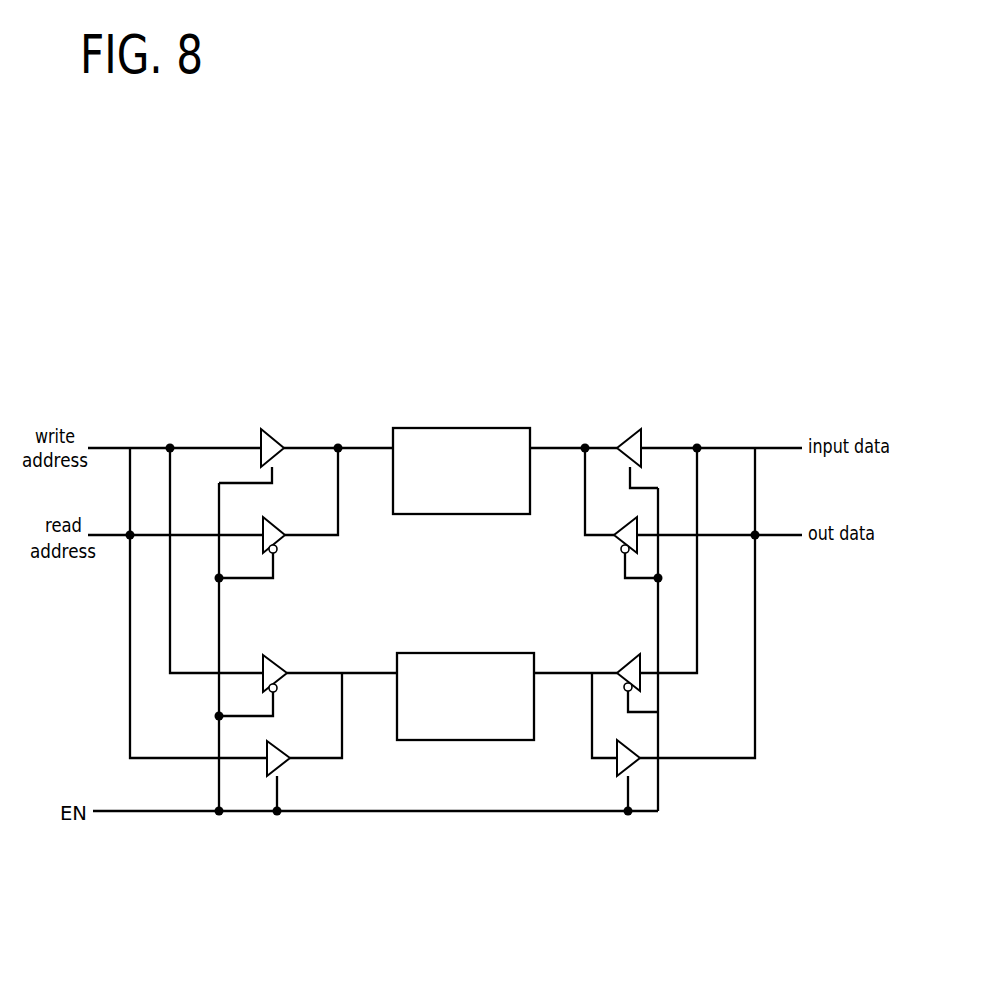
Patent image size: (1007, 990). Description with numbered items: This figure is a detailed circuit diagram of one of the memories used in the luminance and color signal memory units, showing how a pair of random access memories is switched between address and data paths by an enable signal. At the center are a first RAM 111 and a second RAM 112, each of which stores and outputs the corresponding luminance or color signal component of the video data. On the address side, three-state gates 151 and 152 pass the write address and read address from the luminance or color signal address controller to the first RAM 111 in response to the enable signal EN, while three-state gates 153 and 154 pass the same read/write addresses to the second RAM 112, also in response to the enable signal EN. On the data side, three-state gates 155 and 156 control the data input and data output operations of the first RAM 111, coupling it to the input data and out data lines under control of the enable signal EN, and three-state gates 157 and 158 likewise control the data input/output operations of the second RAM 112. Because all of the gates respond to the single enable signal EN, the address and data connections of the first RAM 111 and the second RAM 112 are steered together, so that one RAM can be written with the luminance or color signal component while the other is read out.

The first random access memory 111 is at (456, 428).
The second random access memory 112 is at (458, 653).
The 3-state gate 151 is at (276, 429).
The 3-state gate 152 is at (283, 538).
The 3-state gate 153 is at (283, 664).
The 3-state gate 154 is at (285, 762).
The 3-state gate 155 is at (641, 428).
The 3-state gate 156 is at (640, 527).
The 3-state gate 157 is at (622, 655).
The 3-state gate 158 is at (637, 762).